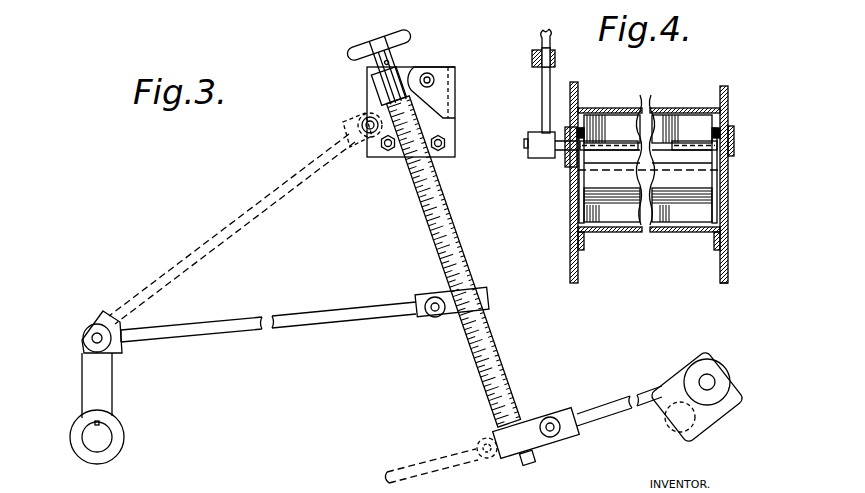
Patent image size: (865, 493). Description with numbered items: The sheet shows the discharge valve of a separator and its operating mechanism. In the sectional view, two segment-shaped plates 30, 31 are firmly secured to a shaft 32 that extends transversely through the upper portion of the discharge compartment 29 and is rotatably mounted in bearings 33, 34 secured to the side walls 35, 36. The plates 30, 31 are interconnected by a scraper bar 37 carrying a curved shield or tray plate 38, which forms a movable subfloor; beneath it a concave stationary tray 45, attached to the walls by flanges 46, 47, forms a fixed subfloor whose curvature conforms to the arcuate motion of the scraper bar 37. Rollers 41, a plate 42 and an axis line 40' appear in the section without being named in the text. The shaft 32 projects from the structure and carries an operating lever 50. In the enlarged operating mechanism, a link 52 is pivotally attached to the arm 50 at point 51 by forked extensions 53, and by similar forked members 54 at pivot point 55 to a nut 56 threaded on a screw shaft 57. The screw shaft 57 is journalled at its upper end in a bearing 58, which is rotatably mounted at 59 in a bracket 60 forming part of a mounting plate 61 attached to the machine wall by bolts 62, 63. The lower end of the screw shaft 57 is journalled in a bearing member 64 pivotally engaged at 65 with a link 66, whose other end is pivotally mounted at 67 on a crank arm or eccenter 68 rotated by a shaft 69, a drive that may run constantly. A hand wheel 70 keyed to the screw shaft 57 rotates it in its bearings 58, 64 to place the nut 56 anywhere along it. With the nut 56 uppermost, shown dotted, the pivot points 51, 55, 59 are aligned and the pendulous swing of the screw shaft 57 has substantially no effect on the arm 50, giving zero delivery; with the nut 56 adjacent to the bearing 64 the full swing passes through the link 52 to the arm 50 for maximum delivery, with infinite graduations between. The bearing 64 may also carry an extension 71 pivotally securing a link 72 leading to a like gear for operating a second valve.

In FIG. 4, the discharge compartment 29 is at (703, 280).
In FIG. 4, the segment-shaped plate 30 is at (717, 185).
In FIG. 4, the segment-shaped plate 31 is at (579, 190).
In FIG. 3, the shaft 32 is at (118, 447).
In FIG. 4, the shaft 32 is at (538, 133).
In FIG. 4, the bearing 33 is at (570, 127).
In FIG. 4, the bearing 34 is at (734, 140).
In FIG. 4, the wall 35 is at (570, 265).
In FIG. 4, the wall 36 is at (728, 265).
In FIG. 4, the scraper bar 37 is at (705, 212).
In FIG. 4, the curved shield or tray plate 38 is at (584, 206).
In FIG. 4, the axis line 40' is at (623, 177).
In FIG. 4, the roller 41 is at (626, 118).
In FIG. 4, the top plate 42 is at (612, 108).
In FIG. 4, the stationary tray 45 is at (628, 233).
In FIG. 4, the flange 46 is at (584, 248).
In FIG. 4, the flange 47 is at (714, 244).
In FIG. 3, the operating lever 50 is at (114, 380).
In FIG. 4, the operating lever 50 is at (542, 88).
In FIG. 3, the pivot point 51 is at (83, 338).
In FIG. 4, the pivot point 51 is at (556, 60).
In FIG. 3, the link 52 is at (262, 208).
In FIG. 3, the forked extensions 53 is at (95, 322).
In FIG. 4, the forked extensions 53 is at (548, 35).
In FIG. 3, the forked members 54 is at (424, 322).
In FIG. 3, the pivot point 55 is at (343, 130).
In FIG. 3, the nut 56 is at (360, 120).
In FIG. 3, the screw shaft 57 is at (430, 212).
In FIG. 3, the bearing 58 is at (370, 86).
In FIG. 3, the pivot mounting 59 is at (431, 74).
In FIG. 3, the bracket 60 is at (440, 90).
In FIG. 3, the mounting plate 61 is at (456, 125).
In FIG. 3, the bolt 62 is at (386, 152).
In FIG. 3, the bolt 63 is at (449, 156).
In FIG. 3, the bearing member 64 is at (542, 410).
In FIG. 3, the pivot 65 is at (556, 433).
In FIG. 3, the link 66 is at (636, 395).
In FIG. 3, the pivot 67 is at (712, 375).
In FIG. 3, the crank arm or eccenter 68 is at (727, 416).
In FIG. 3, the shaft 69 is at (668, 430).
In FIG. 3, the hand wheel 70 is at (348, 50).
In FIG. 3, the extension 71 is at (484, 440).
In FIG. 3, the link 72 is at (414, 466).